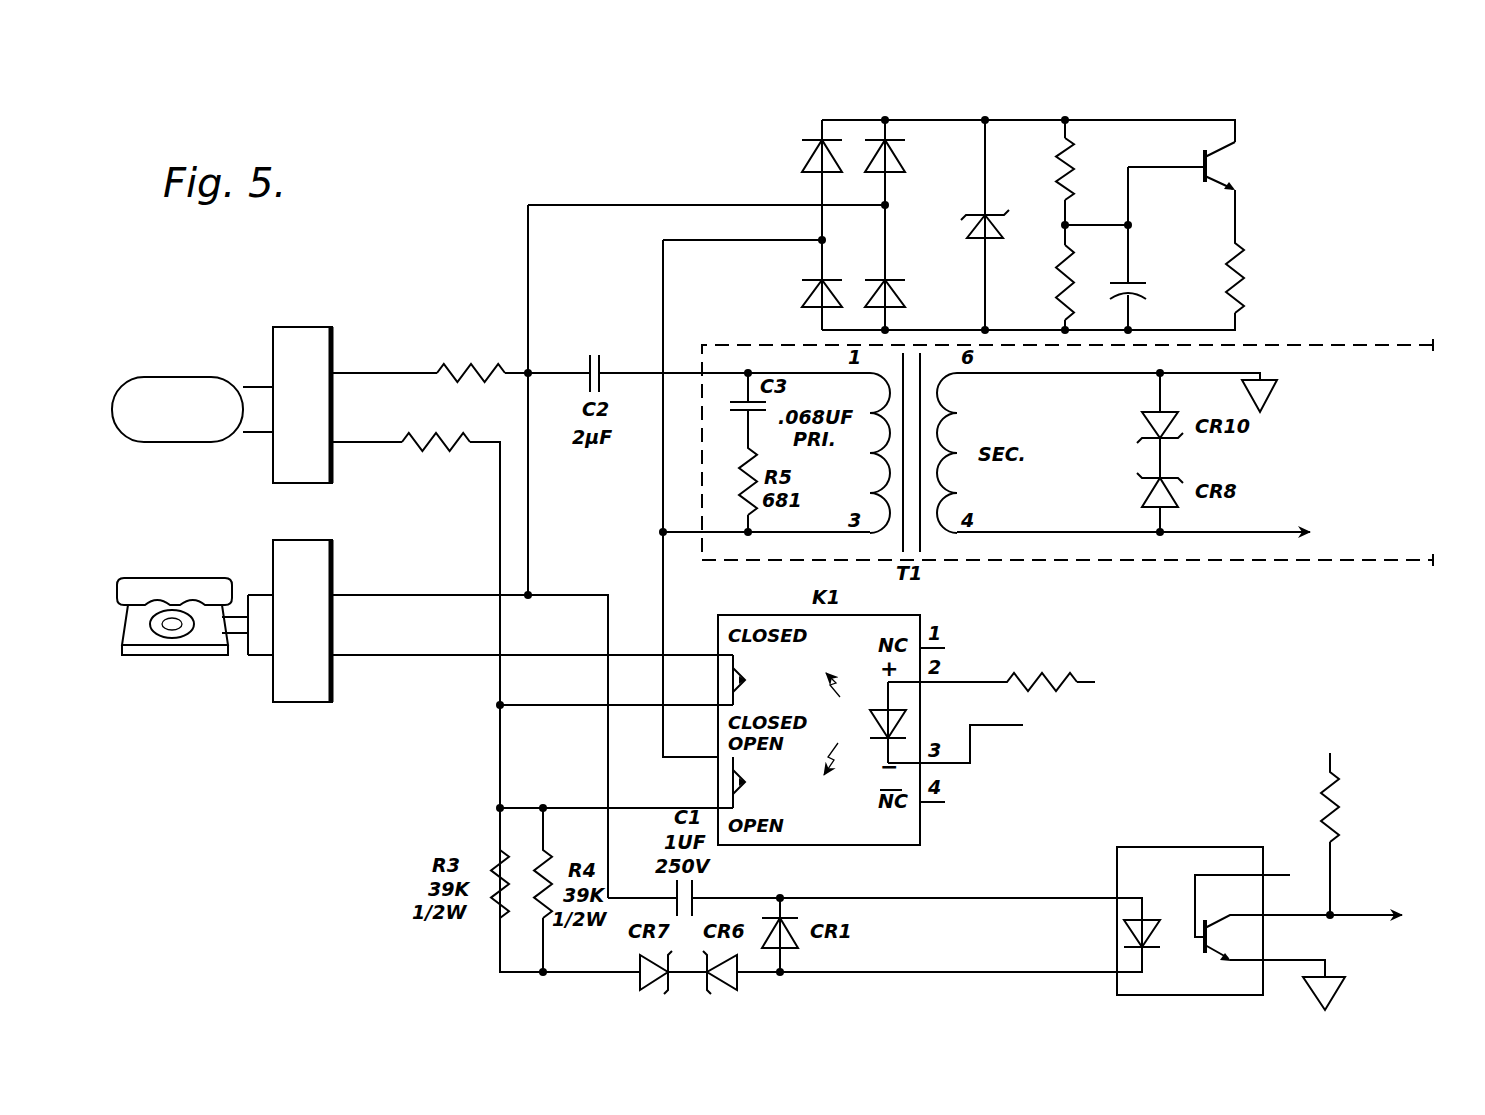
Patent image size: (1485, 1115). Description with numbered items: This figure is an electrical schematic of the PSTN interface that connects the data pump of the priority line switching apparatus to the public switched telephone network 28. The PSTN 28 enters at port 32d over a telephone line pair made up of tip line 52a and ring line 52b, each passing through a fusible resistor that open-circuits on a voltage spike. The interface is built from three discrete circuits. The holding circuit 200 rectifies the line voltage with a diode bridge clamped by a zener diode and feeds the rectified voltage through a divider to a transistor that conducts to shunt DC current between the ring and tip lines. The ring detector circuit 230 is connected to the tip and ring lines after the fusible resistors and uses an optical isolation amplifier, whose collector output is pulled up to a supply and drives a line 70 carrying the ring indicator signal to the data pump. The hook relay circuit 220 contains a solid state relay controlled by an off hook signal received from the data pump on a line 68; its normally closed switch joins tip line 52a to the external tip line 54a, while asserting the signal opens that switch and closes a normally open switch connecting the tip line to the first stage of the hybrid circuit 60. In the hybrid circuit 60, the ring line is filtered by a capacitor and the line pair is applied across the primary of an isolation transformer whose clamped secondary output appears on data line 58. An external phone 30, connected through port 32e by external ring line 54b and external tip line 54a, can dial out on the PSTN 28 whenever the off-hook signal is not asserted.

The PSTN 28 is at (170, 376).
The external phone 30 is at (162, 578).
The port 32d is at (282, 327).
The port 32e is at (305, 702).
The tip line 52a is at (377, 443).
The ring line 52b is at (367, 370).
The external tip line 54a is at (403, 656).
The external ring line 54b is at (480, 595).
The data line 58 is at (1243, 532).
The hybrid circuit 60 is at (1373, 560).
The line 68 is at (963, 765).
The line 70 is at (1372, 920).
The holding circuit 200 is at (1322, 239).
The hook relay circuit 220 is at (1125, 645).
The ring detector circuit 230 is at (1372, 743).